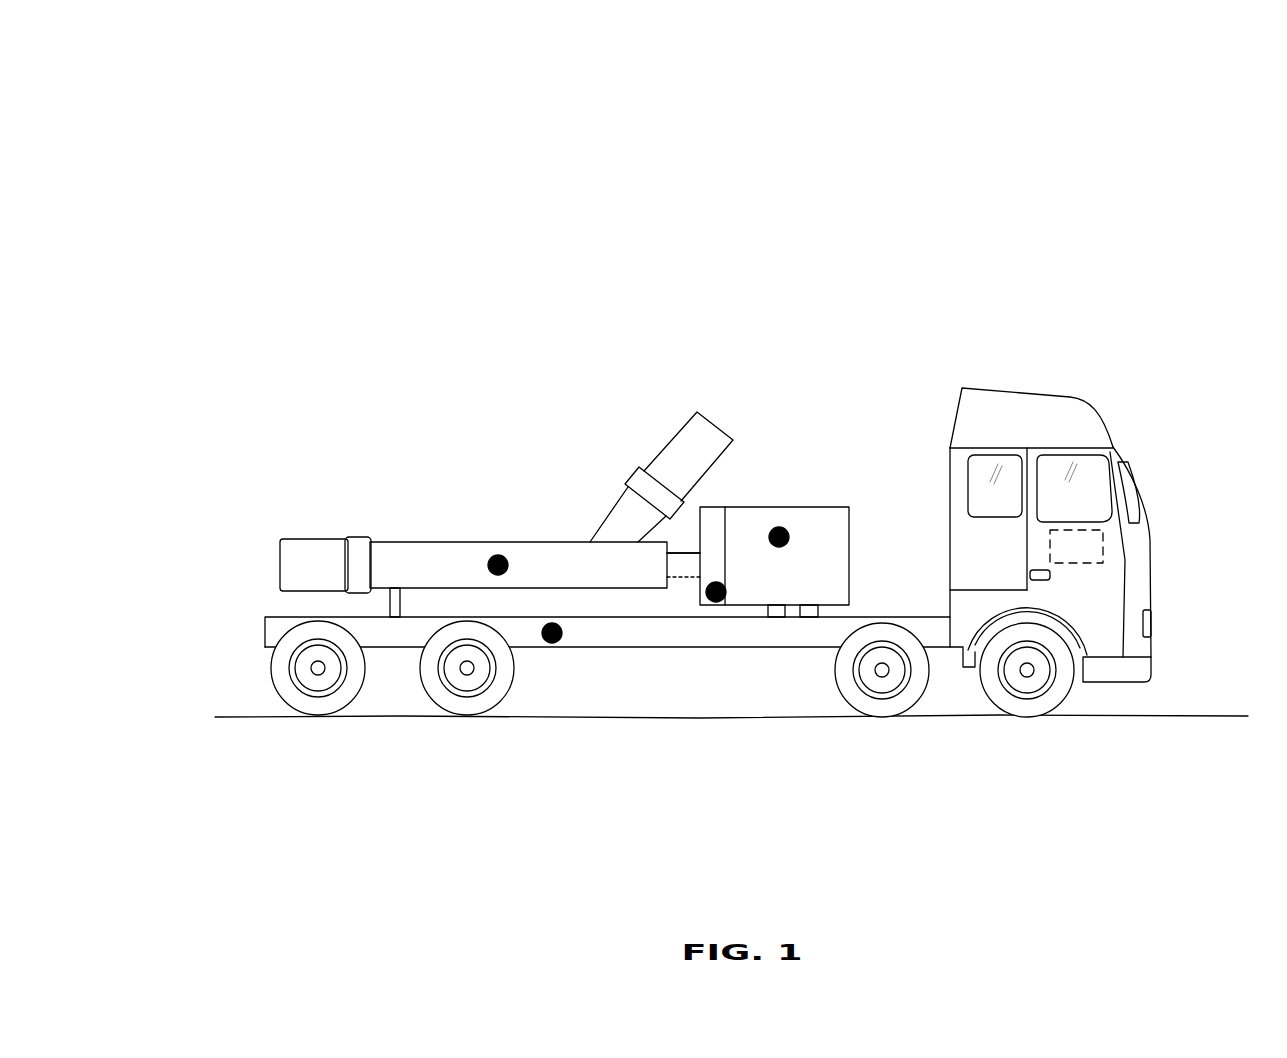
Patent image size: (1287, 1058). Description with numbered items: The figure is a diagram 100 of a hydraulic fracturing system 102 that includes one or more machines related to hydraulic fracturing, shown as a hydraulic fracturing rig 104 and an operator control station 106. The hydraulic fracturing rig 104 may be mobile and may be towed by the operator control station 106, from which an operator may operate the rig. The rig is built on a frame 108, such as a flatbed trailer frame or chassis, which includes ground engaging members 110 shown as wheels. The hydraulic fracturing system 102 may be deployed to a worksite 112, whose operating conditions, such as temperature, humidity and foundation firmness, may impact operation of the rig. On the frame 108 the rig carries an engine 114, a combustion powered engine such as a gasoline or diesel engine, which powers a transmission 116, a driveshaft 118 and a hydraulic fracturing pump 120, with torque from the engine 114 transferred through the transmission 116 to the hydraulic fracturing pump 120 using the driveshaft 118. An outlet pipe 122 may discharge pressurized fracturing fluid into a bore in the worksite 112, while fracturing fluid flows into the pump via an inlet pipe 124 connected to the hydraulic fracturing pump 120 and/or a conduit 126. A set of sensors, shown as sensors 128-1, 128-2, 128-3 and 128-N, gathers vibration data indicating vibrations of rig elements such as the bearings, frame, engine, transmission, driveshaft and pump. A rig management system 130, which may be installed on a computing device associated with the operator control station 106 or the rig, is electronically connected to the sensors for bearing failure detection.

The diagram 100 is at (230, 63).
The hydraulic fracturing system 102 is at (1120, 365).
The hydraulic fracturing rig 104 is at (218, 373).
The operator control station 106 is at (1095, 433).
The frame 108 is at (267, 613).
The ground engaging members 110 is at (355, 669).
The worksite 112 is at (1222, 583).
The engine 114 is at (862, 512).
The transmission 116 is at (690, 533).
The driveshaft 118 is at (624, 490).
The hydraulic fracturing pump 120 is at (485, 526).
The outlet pipe 122 is at (313, 552).
The inlet pipe 124 is at (603, 516).
The conduit 126 is at (668, 446).
The sensor 128-1 is at (498, 575).
The sensor 128-2 is at (552, 643).
The sensor 128-3 is at (716, 602).
The sensor 128-N is at (779, 547).
The rig management system 130 is at (1096, 566).